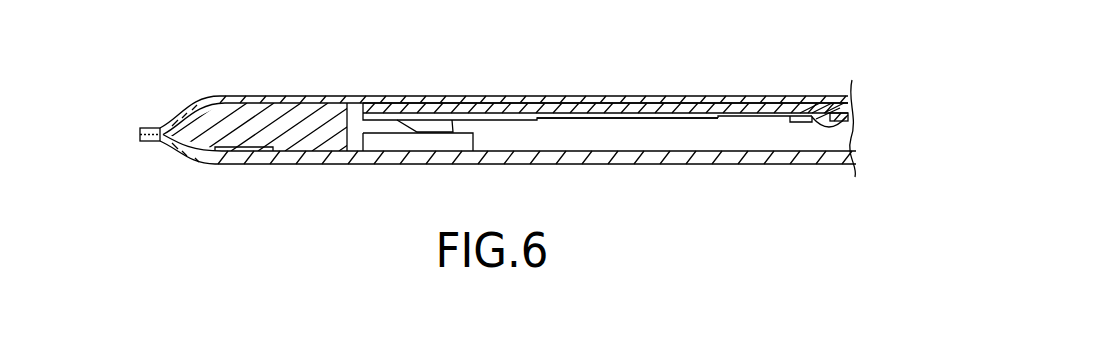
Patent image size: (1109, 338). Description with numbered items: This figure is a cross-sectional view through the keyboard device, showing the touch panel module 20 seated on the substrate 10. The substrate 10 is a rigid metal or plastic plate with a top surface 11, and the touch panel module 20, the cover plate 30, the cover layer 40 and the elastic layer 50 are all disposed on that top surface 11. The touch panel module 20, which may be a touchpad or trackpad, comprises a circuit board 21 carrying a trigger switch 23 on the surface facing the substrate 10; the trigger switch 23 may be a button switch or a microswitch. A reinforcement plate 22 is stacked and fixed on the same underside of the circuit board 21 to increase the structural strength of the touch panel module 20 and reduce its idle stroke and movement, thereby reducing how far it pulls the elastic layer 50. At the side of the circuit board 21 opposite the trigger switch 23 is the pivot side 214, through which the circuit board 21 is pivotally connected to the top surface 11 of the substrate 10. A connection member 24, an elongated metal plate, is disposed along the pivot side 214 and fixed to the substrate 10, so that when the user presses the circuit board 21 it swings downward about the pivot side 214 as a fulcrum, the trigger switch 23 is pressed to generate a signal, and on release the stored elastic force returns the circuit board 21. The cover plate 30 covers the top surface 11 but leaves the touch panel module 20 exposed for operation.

The substrate 10 is at (637, 157).
The top surface 11 is at (620, 130).
The touch panel module 20 is at (405, 48).
The circuit board 21 is at (718, 117).
The reinforcement plate 22 is at (669, 107).
The trigger switch 23 is at (421, 118).
The connection member 24 is at (755, 100).
The cover plate 30 is at (808, 102).
The cover layer 40 is at (842, 112).
The elastic layer 50 is at (563, 96).
The pivot side 214 is at (788, 122).